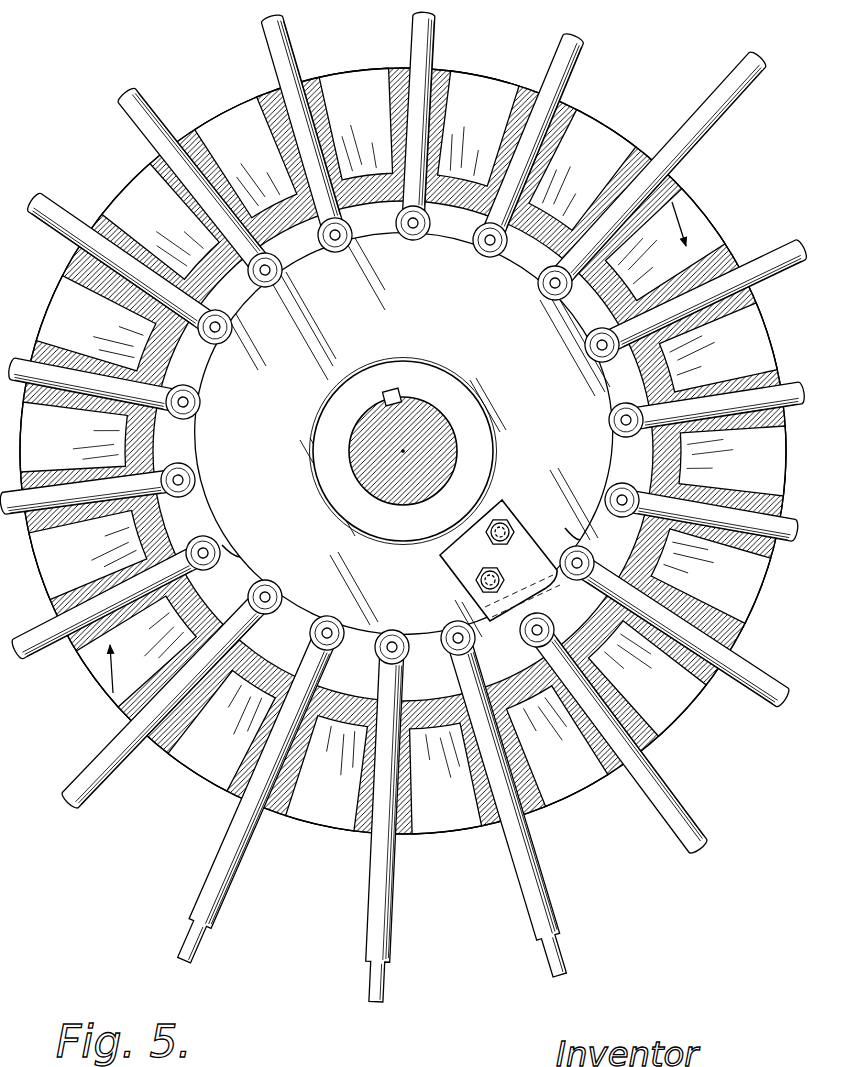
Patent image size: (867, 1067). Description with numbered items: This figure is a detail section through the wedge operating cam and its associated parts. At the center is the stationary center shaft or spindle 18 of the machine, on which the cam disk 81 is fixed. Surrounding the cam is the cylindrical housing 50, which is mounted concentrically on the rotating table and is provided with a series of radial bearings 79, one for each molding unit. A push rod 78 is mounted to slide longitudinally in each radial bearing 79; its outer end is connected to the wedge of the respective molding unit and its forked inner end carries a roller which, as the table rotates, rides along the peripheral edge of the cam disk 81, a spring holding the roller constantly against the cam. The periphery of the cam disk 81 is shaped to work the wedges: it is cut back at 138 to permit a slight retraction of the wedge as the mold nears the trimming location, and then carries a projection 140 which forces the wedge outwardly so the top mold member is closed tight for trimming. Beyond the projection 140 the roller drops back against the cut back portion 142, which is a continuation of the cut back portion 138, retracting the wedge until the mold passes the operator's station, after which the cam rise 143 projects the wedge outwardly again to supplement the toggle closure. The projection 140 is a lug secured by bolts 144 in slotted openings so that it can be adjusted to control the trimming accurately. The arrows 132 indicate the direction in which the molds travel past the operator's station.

The center shaft or spindle 18 is at (422, 424).
The cylindrical housing 50 is at (580, 777).
The push rod 78 is at (560, 83).
The radial bearing 79 is at (115, 232).
The cam disk 81 is at (446, 310).
The arrows 132 is at (378, 1020).
The cut back portion 138 is at (581, 541).
The projection 140 is at (540, 598).
The cut back portion 142 is at (362, 618).
The cam rise 143 is at (245, 554).
The bolts 144 is at (490, 568).